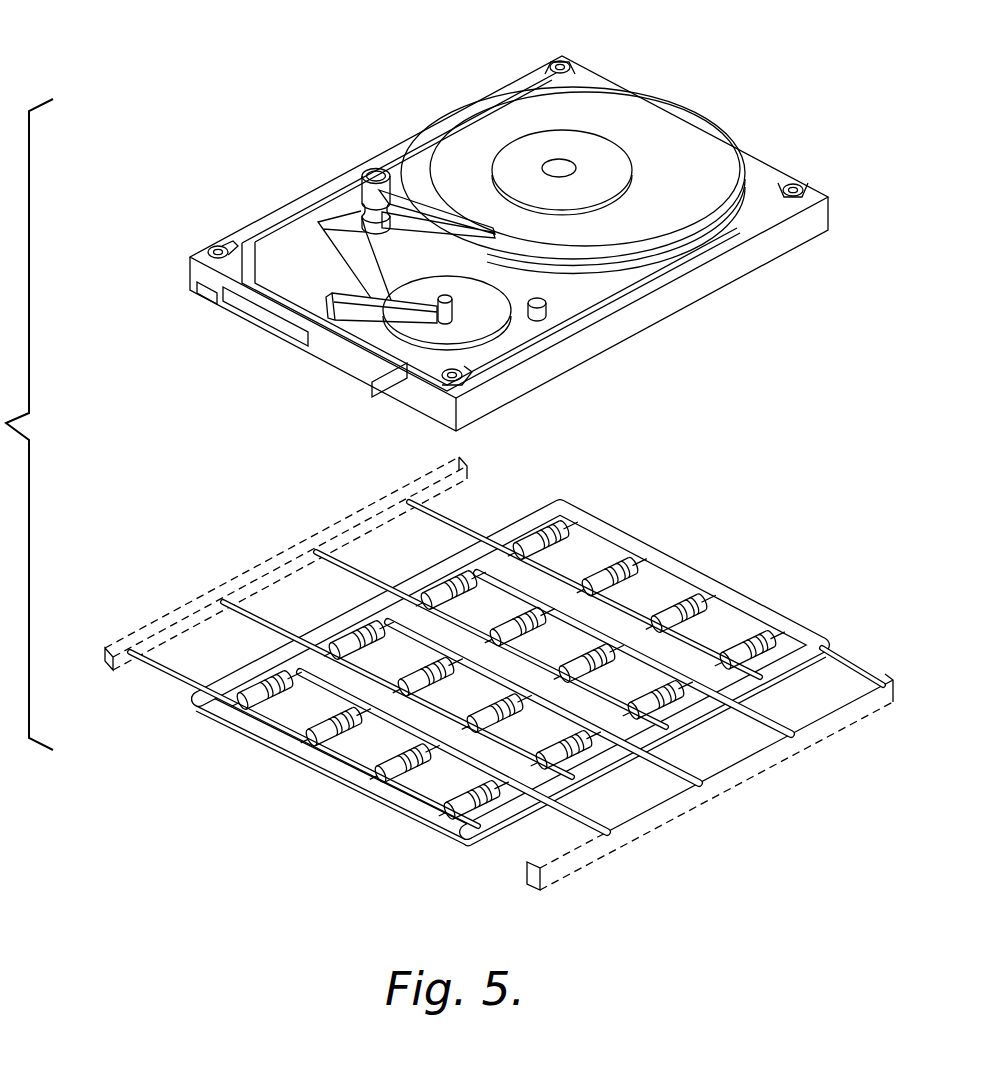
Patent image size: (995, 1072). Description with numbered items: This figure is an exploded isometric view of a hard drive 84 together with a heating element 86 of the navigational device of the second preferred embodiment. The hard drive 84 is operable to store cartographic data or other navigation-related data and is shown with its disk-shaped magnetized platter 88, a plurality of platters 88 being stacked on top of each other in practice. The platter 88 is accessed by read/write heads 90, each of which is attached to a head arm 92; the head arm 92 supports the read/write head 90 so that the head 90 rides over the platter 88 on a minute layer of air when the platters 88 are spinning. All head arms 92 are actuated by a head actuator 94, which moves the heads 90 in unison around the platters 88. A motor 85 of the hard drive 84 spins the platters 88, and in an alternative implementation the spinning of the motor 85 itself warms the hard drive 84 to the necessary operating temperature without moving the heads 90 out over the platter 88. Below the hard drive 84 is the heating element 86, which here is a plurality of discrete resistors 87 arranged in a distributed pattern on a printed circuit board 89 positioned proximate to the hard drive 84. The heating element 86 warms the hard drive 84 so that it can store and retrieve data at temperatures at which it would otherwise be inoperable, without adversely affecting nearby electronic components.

The hard drive 84 is at (270, 203).
The motor 85 is at (480, 316).
The heating element 86 is at (687, 560).
The discrete resistors 87 is at (616, 572).
The platter 88 is at (633, 110).
The printed circuit board 89 is at (455, 825).
The read/write head 90 is at (470, 203).
The head arm 92 is at (408, 190).
The head actuator 94 is at (378, 293).